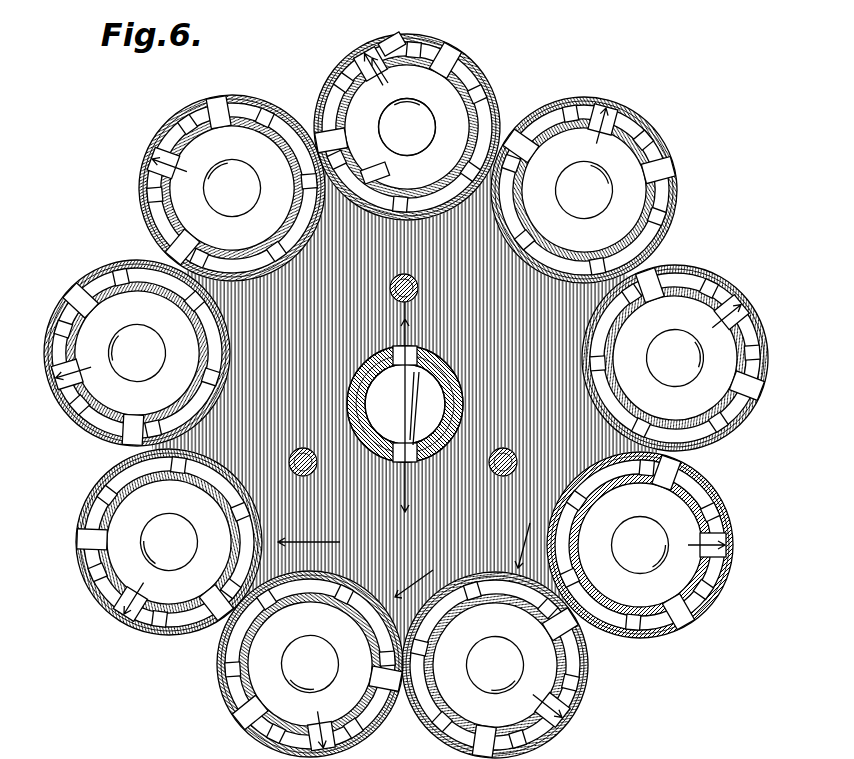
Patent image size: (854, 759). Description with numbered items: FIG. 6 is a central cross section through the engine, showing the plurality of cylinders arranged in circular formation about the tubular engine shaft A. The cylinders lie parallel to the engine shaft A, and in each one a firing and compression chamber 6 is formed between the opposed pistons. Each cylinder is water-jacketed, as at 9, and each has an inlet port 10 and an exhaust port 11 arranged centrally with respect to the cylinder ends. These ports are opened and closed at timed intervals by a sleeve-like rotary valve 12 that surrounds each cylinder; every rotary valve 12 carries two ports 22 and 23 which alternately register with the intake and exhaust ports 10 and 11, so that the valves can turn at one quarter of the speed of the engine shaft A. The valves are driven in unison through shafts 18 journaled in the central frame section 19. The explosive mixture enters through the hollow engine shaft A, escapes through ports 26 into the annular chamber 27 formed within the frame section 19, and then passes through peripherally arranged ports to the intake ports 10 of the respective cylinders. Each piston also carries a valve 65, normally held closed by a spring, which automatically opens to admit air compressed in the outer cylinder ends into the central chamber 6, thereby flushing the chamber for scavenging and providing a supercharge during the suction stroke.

The firing and compression chamber 6 is at (407, 127).
The water jacket 9 is at (200, 118).
The inlet port 10 is at (505, 621).
The exhaust port 11 is at (548, 716).
The rotary valve 12 is at (478, 88).
The shaft 18 is at (418, 291).
The central frame section 19 is at (405, 405).
The port 22 is at (592, 457).
The port 23 is at (402, 40).
The ports 26 is at (405, 407).
The annular chamber 27 is at (351, 221).
The valve 65 is at (407, 127).
The tubular engine shaft A is at (383, 418).